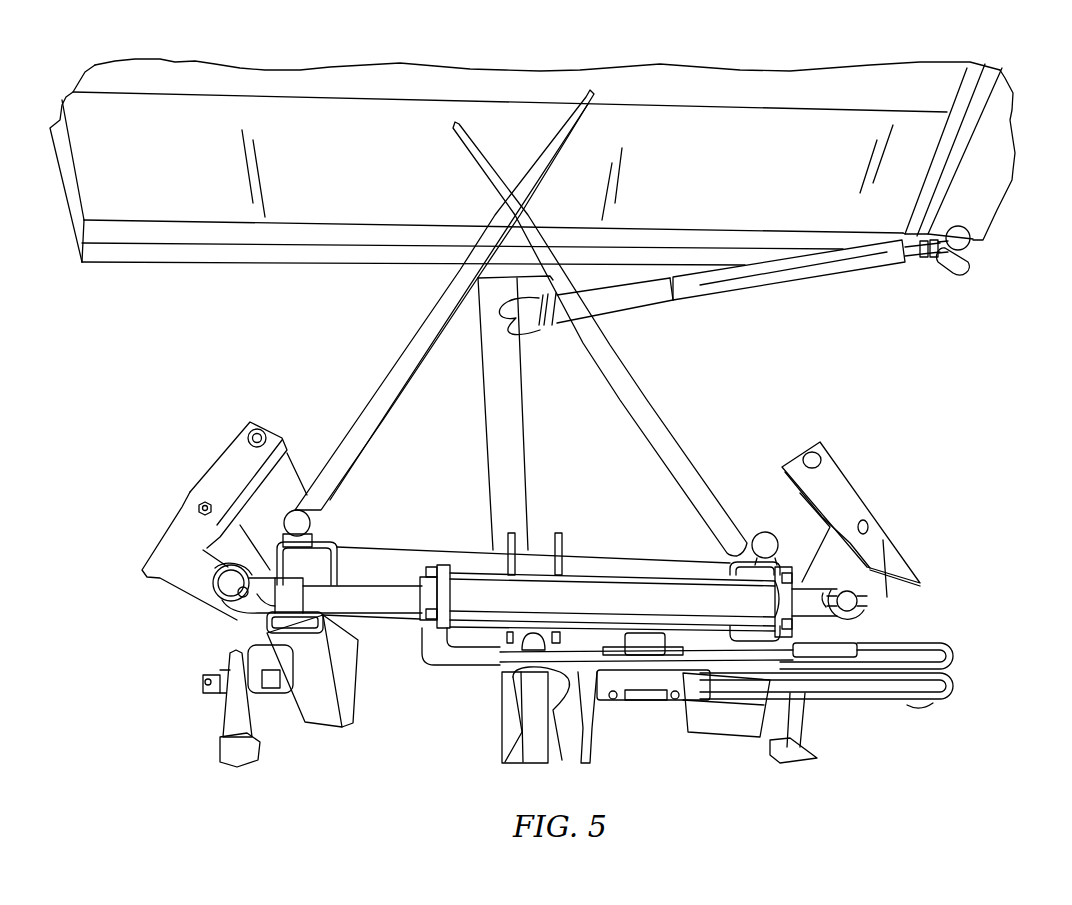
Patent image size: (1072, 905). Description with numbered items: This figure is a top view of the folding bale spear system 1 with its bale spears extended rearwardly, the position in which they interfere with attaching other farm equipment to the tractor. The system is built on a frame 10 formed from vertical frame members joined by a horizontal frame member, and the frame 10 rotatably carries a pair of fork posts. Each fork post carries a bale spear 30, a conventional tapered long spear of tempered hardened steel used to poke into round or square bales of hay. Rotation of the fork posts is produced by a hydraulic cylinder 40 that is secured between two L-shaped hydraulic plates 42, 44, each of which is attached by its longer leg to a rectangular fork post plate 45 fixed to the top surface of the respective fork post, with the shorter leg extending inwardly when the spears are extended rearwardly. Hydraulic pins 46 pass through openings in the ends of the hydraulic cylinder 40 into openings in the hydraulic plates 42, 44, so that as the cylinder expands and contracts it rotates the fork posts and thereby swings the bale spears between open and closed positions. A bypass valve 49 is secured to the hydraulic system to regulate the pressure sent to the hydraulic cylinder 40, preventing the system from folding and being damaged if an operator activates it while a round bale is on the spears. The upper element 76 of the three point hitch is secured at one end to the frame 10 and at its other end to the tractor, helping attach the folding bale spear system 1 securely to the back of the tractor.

The folding bale spear system 1 is at (607, 760).
The frame 10 is at (385, 637).
The bale spear 30 is at (668, 452).
The hydraulic cylinder 40 is at (480, 593).
The hydraulic plate 42 is at (180, 545).
The hydraulic plate 44 is at (897, 570).
The fork post plate 45 is at (247, 503).
The hydraulic pin 46 is at (853, 603).
The bypass valve 49 is at (585, 700).
The upper element 76 is at (533, 717).